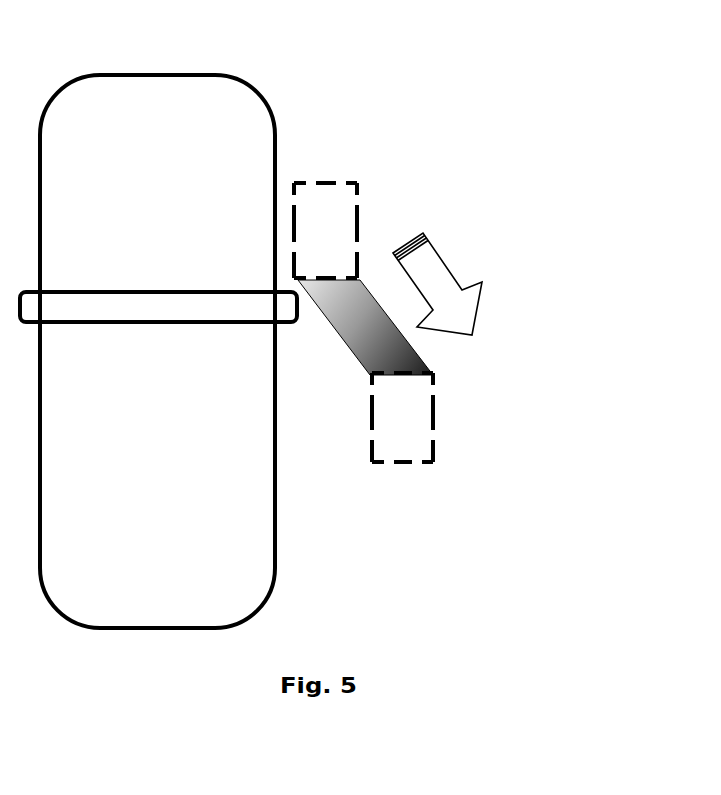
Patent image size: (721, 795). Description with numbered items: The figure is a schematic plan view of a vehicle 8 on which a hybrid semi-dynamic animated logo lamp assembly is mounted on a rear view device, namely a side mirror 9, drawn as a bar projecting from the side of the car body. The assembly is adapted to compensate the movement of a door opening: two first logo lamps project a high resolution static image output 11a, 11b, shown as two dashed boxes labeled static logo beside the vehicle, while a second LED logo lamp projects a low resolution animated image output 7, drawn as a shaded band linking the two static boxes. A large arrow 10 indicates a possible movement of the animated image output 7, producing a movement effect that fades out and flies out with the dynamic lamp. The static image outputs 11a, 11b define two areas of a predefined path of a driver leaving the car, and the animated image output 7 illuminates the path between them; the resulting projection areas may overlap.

The vehicle 8 is at (259, 88).
The rear view device (side mirror) 9 is at (289, 336).
The low resolution animated image output 7 is at (347, 353).
The arrows indicating a possible movement of the animated image output 10 is at (449, 227).
The high resolution static image output 11a is at (337, 177).
The high resolution static image output 11b is at (407, 466).